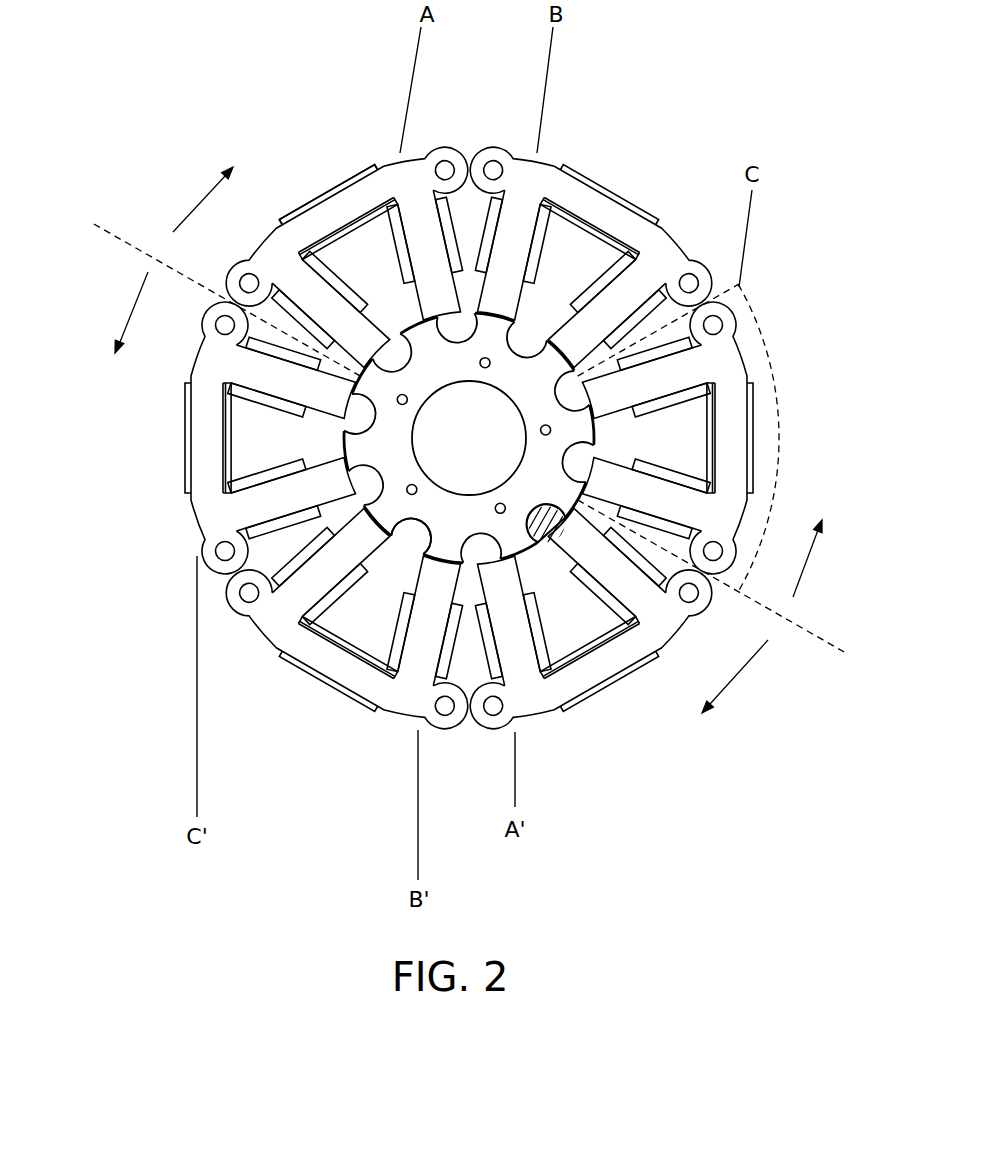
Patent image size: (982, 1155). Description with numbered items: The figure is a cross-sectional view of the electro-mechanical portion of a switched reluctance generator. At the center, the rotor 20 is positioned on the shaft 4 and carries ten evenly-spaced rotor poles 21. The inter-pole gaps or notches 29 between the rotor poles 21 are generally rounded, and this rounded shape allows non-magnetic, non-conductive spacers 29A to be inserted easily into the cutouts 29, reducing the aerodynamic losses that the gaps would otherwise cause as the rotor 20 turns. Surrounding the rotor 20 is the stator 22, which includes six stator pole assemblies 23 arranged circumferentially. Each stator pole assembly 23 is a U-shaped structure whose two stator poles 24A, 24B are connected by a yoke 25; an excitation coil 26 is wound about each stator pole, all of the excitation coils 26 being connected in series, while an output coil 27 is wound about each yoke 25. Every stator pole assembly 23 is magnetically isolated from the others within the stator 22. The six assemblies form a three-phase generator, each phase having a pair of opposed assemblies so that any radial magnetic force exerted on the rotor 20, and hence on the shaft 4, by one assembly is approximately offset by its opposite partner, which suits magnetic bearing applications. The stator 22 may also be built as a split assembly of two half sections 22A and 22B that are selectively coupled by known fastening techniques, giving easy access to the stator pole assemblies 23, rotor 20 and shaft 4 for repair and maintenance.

The shaft 4 is at (458, 448).
The rotor 20 is at (386, 437).
The rotor poles 21 is at (469, 438).
The stator 22 is at (148, 343).
The half section 22A is at (505, 380).
The half section 22B is at (425, 492).
The stator pole assembly 23 is at (765, 327).
The stator pole 24A is at (645, 382).
The stator pole 24B is at (645, 495).
The yoke 25 is at (747, 390).
The excitation coil 26 is at (661, 345).
The output coil 27 is at (706, 437).
The inter-pole gaps 29 is at (413, 538).
The spacers 29A is at (547, 537).